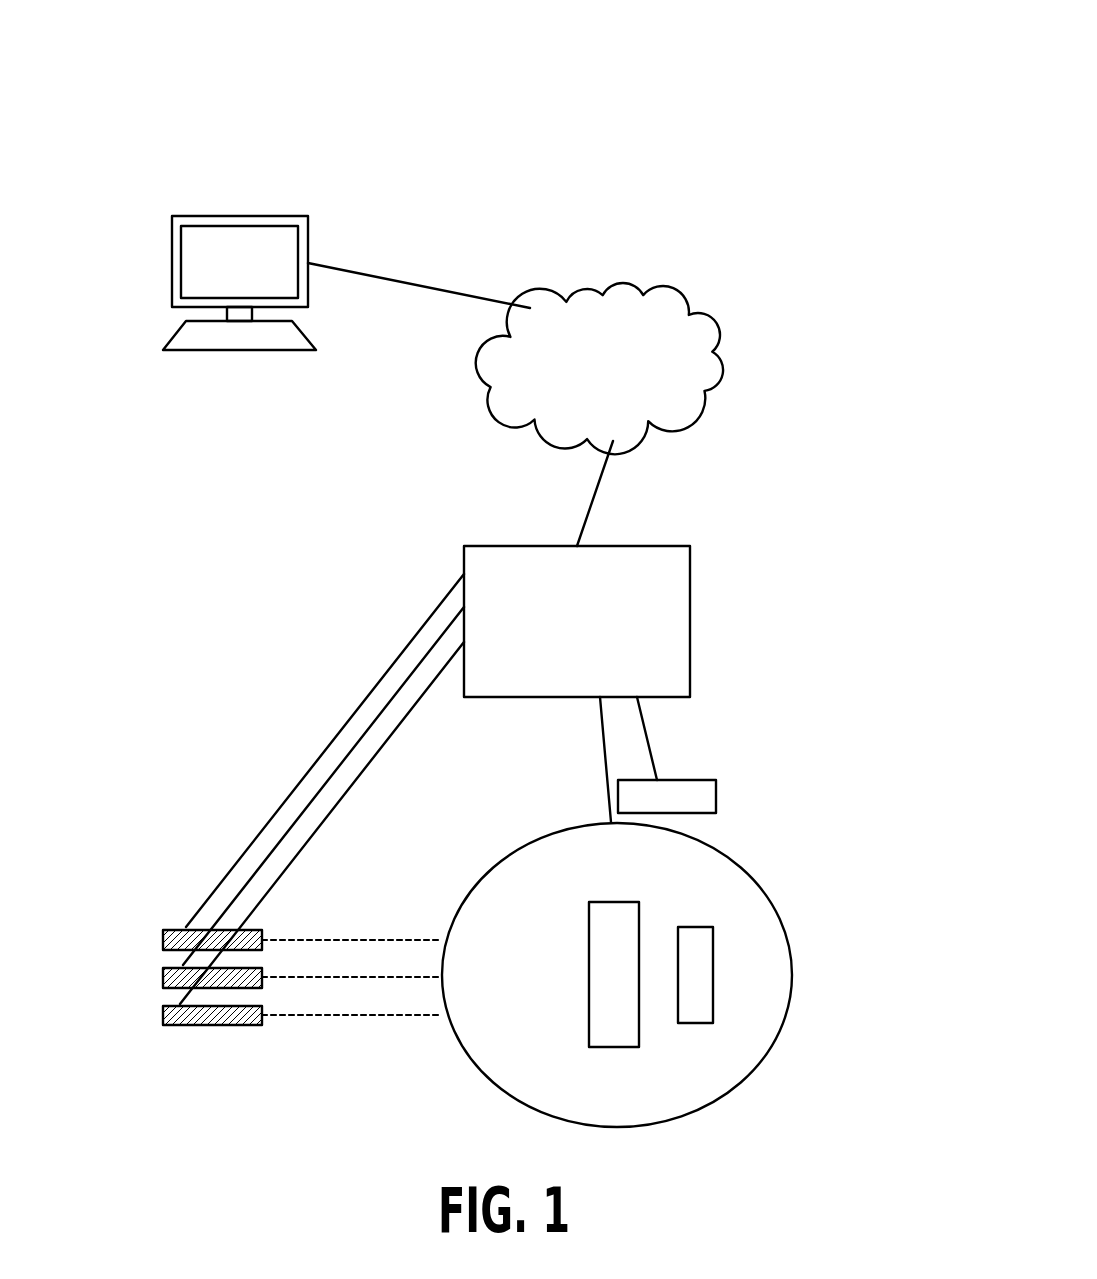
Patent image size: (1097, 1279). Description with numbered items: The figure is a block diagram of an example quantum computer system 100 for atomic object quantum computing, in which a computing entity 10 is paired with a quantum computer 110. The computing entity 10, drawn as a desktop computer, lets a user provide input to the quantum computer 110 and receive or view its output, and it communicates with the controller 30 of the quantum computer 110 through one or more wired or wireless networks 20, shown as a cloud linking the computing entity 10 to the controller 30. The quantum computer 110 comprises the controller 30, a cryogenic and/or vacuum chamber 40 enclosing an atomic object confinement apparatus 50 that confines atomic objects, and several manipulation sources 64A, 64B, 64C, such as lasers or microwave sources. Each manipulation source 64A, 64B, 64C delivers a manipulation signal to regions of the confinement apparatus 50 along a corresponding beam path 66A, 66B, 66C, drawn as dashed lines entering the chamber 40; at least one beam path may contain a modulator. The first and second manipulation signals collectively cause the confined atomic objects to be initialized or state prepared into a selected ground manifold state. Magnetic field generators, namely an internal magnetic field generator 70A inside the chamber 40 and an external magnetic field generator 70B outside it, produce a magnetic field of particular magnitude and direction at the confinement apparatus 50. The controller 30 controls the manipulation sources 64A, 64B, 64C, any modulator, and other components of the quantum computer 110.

The computing entity 10 is at (238, 237).
The wired or wireless networks 20 is at (673, 292).
The controller 30 is at (577, 621).
The cryogenic and/or vacuum chamber 40 is at (783, 916).
The atomic object confinement apparatus 50 is at (641, 978).
The first manipulation source 64A is at (163, 935).
The second manipulation source 64B is at (163, 973).
The third manipulation source 64C is at (163, 1010).
The first beam path 66A is at (427, 939).
The second beam path 66B is at (408, 977).
The third beam path 66C is at (427, 1014).
The internal magnetic field generator 70A is at (709, 973).
The external magnetic field generator 70B is at (716, 795).
The quantum computer system 100 is at (833, 120).
The quantum computer 110 is at (840, 433).